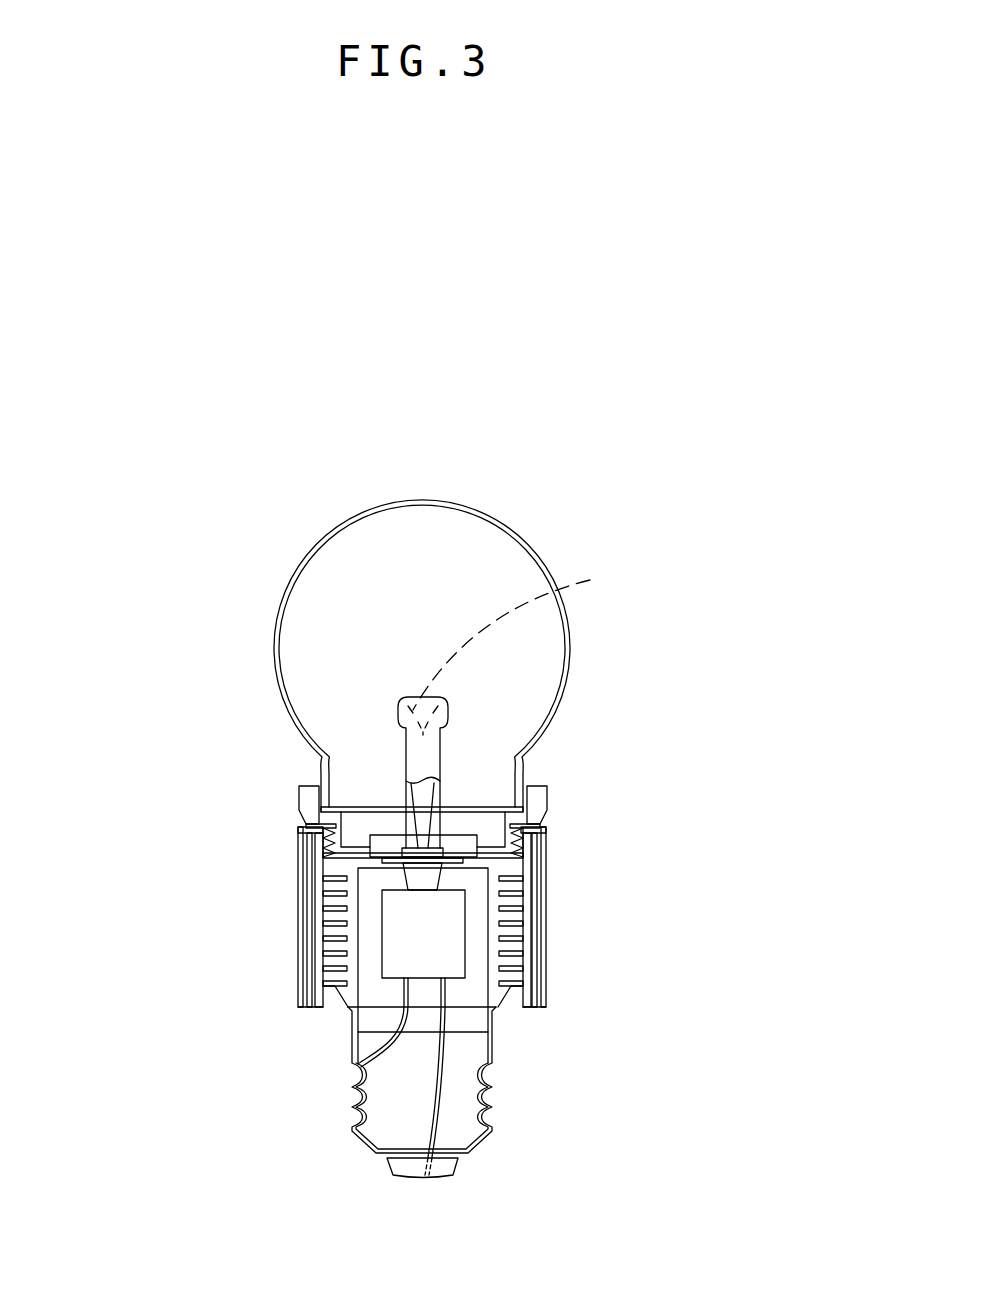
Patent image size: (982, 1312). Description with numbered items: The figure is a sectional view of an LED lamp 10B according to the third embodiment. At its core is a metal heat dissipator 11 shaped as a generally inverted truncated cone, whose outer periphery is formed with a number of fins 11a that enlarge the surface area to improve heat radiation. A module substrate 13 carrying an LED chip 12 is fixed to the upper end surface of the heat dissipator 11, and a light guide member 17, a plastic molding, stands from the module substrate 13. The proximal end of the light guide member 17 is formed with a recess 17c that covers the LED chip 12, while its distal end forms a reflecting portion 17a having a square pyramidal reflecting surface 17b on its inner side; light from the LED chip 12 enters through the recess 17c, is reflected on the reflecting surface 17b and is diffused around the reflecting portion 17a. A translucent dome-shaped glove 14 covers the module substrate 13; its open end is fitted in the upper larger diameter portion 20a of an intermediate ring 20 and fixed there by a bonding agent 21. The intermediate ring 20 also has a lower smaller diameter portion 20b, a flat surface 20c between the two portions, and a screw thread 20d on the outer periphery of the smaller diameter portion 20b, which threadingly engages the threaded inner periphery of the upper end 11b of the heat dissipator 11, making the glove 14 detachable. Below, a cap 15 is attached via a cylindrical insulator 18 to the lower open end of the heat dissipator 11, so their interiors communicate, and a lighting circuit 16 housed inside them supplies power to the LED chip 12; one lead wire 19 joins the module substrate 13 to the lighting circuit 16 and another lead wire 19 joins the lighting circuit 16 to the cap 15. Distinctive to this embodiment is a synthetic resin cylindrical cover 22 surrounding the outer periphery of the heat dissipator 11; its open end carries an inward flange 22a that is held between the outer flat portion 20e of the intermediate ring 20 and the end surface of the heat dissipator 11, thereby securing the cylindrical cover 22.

The LED lamp 10B is at (562, 546).
The glove 14 is at (296, 570).
The light guide member 17 is at (430, 765).
The reflecting portion 17a is at (443, 713).
The reflecting surface 17b is at (590, 580).
The recess 17c is at (440, 812).
The LED chip 12 is at (385, 845).
The module substrate 13 is at (410, 858).
The intermediate ring 20 is at (550, 781).
The larger diameter portion 20a is at (548, 800).
The smaller diameter portion 20b is at (508, 847).
The flat surface 20c is at (540, 805).
The screw thread 20d is at (522, 848).
The outer flat portion 20e is at (324, 843).
The bonding agent 21 is at (342, 845).
The cylindrical cover 22 is at (546, 882).
The flange 22a is at (548, 829).
The heat dissipator 11 is at (503, 878).
The fins 11a is at (335, 943).
The upper end 11b is at (322, 822).
The lighting circuit 16 is at (400, 962).
The cylindrical insulator 18 is at (372, 1022).
The cap 15 is at (488, 1097).
The lead wire 19 is at (403, 877).